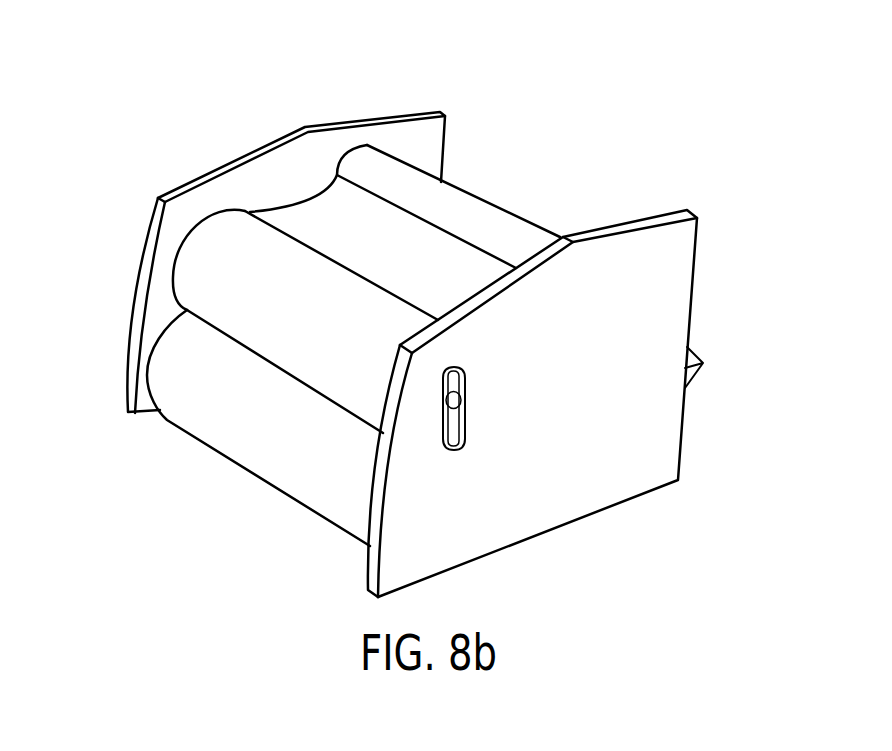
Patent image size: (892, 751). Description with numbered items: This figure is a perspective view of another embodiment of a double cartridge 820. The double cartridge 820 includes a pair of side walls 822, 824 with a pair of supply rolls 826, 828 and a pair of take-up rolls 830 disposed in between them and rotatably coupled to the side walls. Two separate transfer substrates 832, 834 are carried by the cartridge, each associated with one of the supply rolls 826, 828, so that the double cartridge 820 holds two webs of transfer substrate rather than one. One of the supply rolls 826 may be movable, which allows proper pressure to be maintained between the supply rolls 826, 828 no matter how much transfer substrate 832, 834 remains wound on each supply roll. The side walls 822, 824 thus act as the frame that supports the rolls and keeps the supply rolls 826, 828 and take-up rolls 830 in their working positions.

The double cartridge 820 is at (336, 83).
The side wall 822 is at (667, 255).
The side wall 824 is at (422, 128).
The supply roll 826 is at (203, 220).
The supply roll 828 is at (332, 525).
The take-up rolls 830 is at (505, 210).
The transfer substrate 832 is at (312, 212).
The transfer substrate 834 is at (175, 422).